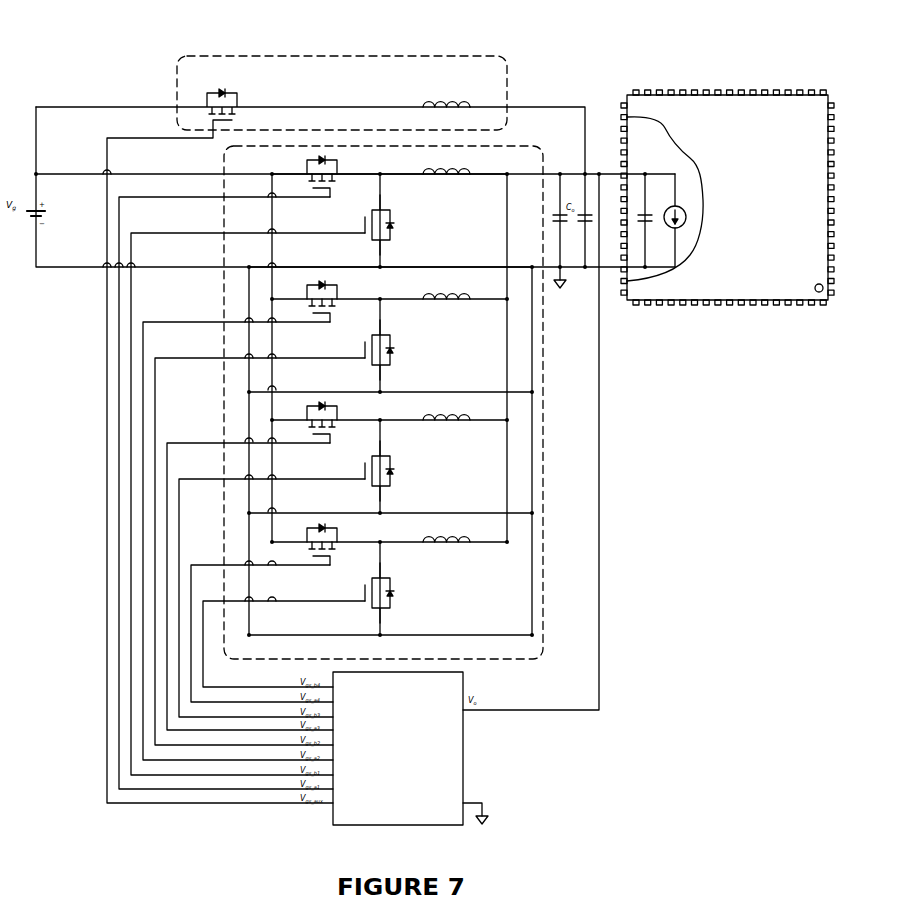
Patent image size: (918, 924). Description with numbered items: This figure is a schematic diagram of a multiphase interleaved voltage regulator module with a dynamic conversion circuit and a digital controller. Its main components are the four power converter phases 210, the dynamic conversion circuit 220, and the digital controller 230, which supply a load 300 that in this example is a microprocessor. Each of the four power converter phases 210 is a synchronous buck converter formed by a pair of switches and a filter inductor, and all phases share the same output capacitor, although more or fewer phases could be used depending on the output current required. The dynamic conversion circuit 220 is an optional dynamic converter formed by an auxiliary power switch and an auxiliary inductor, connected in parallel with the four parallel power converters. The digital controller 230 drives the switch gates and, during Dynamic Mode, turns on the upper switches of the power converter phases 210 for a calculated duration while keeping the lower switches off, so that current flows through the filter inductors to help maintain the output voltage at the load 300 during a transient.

The dynamic conversion circuit 220 is at (494, 56).
The power converter phases 210 is at (512, 662).
The load 300 is at (770, 100).
The digital controller 230 is at (465, 767).